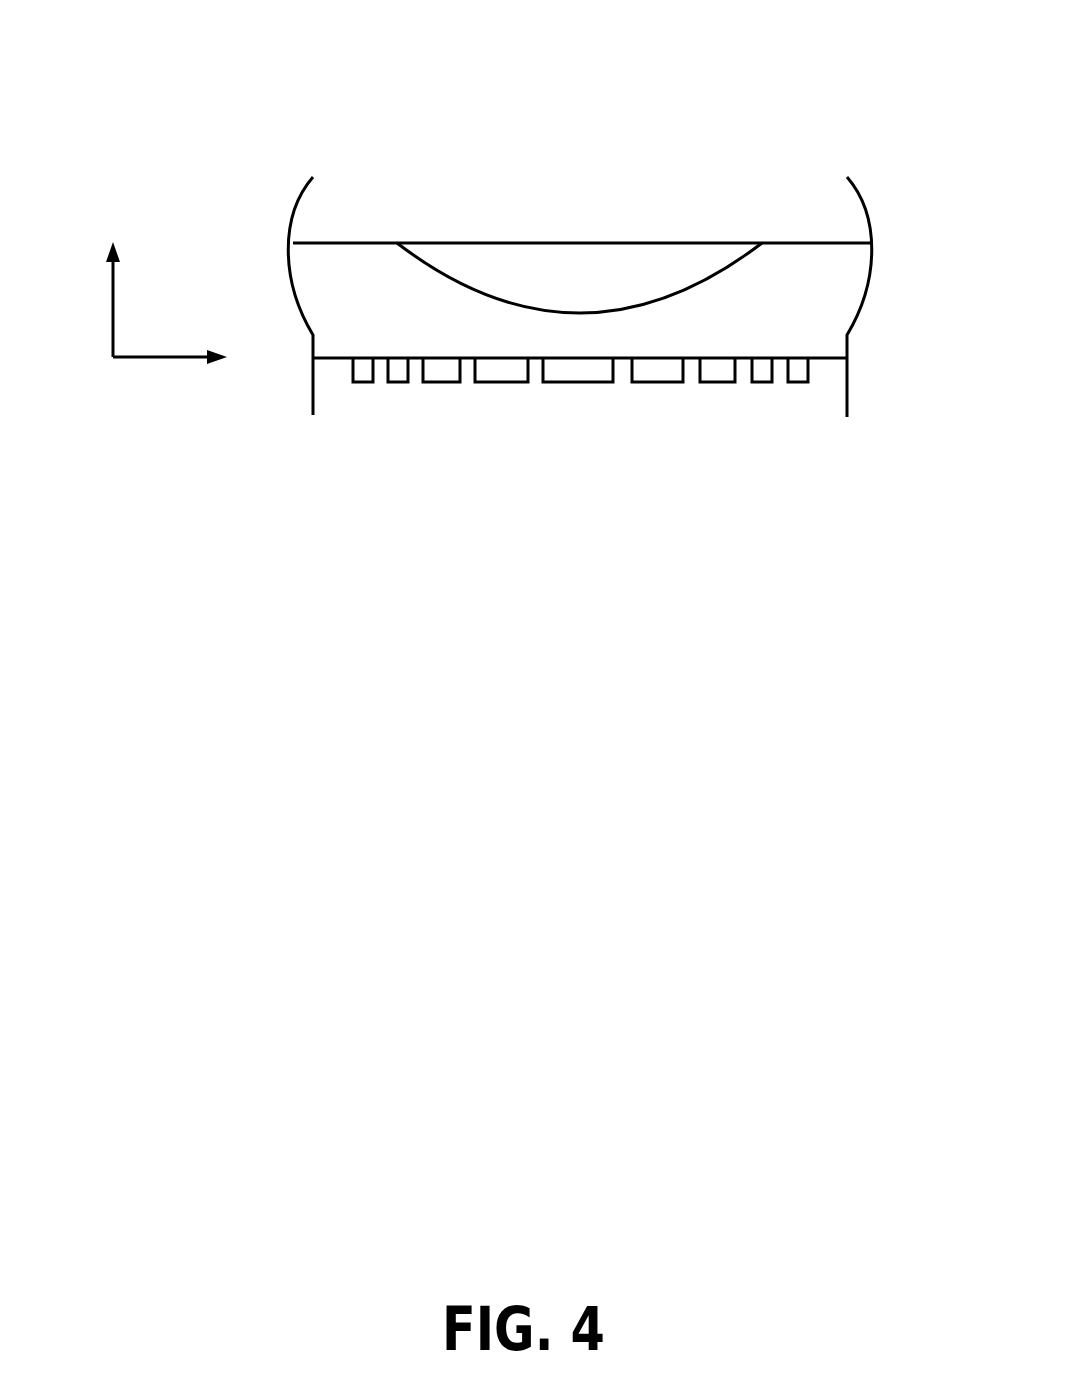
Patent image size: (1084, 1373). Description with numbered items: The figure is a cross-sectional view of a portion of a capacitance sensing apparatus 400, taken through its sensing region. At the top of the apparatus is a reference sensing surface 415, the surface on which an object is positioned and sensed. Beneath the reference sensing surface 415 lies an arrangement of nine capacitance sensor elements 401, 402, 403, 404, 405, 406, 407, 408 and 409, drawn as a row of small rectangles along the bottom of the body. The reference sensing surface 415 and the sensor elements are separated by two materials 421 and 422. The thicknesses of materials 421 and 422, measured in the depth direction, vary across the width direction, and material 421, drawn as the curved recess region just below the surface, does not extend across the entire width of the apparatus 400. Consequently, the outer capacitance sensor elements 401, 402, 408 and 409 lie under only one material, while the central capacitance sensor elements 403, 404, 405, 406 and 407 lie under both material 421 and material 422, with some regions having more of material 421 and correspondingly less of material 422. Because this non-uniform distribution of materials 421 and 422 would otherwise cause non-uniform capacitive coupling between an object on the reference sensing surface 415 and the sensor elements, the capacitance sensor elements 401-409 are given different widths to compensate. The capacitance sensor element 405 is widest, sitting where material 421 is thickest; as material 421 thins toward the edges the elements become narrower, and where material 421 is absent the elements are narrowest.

The capacitance sensing apparatus 400 is at (605, 28).
The capacitance sensor element 401 is at (351, 403).
The capacitance sensor element 402 is at (390, 406).
The capacitance sensor element 403 is at (438, 407).
The capacitance sensor element 404 is at (501, 408).
The capacitance sensor element 405 is at (577, 408).
The capacitance sensor element 406 is at (658, 408).
The capacitance sensor element 407 is at (722, 407).
The capacitance sensor element 408 is at (770, 406).
The capacitance sensor element 409 is at (808, 403).
The reference sensing surface 415 is at (360, 218).
The material 421 is at (555, 292).
The material 422 is at (743, 328).